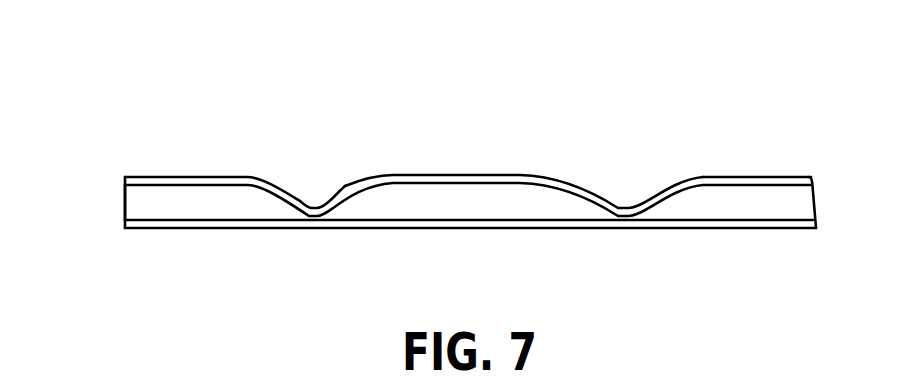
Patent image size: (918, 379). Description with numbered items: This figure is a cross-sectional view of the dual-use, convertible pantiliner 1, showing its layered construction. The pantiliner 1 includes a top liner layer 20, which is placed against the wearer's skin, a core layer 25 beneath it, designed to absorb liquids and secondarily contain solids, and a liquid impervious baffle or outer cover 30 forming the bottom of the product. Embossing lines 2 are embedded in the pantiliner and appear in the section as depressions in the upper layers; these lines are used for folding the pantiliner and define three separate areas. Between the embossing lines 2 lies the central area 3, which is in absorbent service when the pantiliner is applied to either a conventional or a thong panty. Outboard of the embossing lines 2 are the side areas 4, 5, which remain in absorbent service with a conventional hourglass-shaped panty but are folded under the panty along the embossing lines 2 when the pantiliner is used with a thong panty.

The pantiliner 1 is at (227, 262).
The line of embossing 2 is at (320, 173).
The central area 3 is at (480, 153).
The side area 4 is at (210, 148).
The side area 5 is at (734, 150).
The top liner layer 20 is at (123, 181).
The core layer 25 is at (123, 202).
The liquid impervious baffle 30 is at (123, 227).